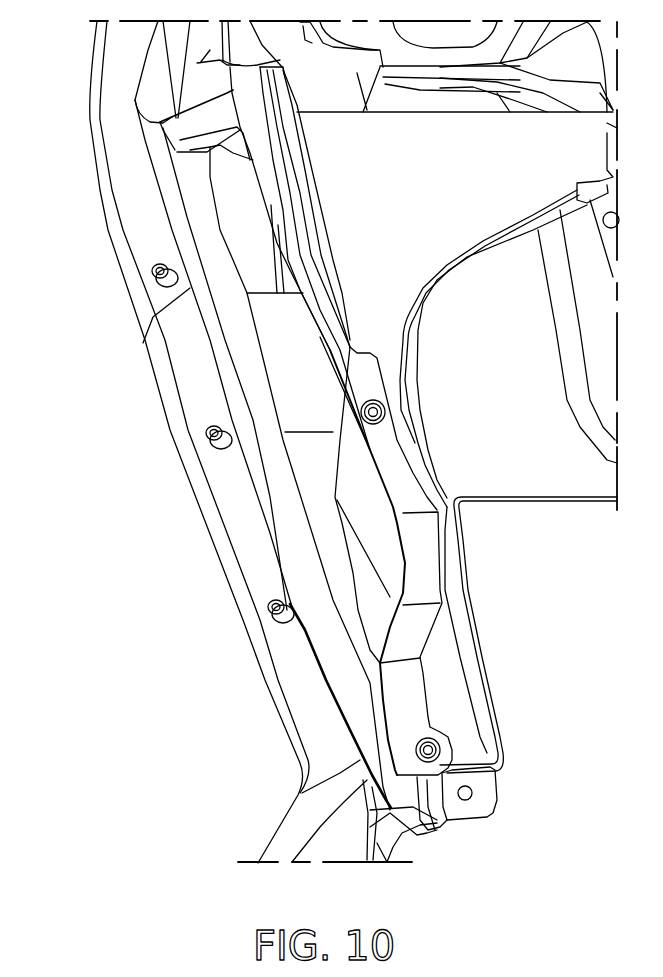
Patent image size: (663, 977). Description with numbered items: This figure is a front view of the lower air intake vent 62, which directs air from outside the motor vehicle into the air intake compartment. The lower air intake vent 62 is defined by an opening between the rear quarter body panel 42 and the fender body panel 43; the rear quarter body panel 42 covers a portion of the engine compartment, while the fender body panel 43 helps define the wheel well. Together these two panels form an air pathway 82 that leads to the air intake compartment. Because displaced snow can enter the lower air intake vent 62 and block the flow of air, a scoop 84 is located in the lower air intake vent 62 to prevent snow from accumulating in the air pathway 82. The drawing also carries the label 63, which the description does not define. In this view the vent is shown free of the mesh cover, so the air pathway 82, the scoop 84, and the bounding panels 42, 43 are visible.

The fender body panel 43 is at (133, 178).
The air pathway 82 is at (248, 200).
The lower air intake vent 62 is at (265, 264).
The fastener 63 is at (279, 427).
The scoop 84 is at (300, 378).
The rear quarter body panel 42 is at (437, 553).